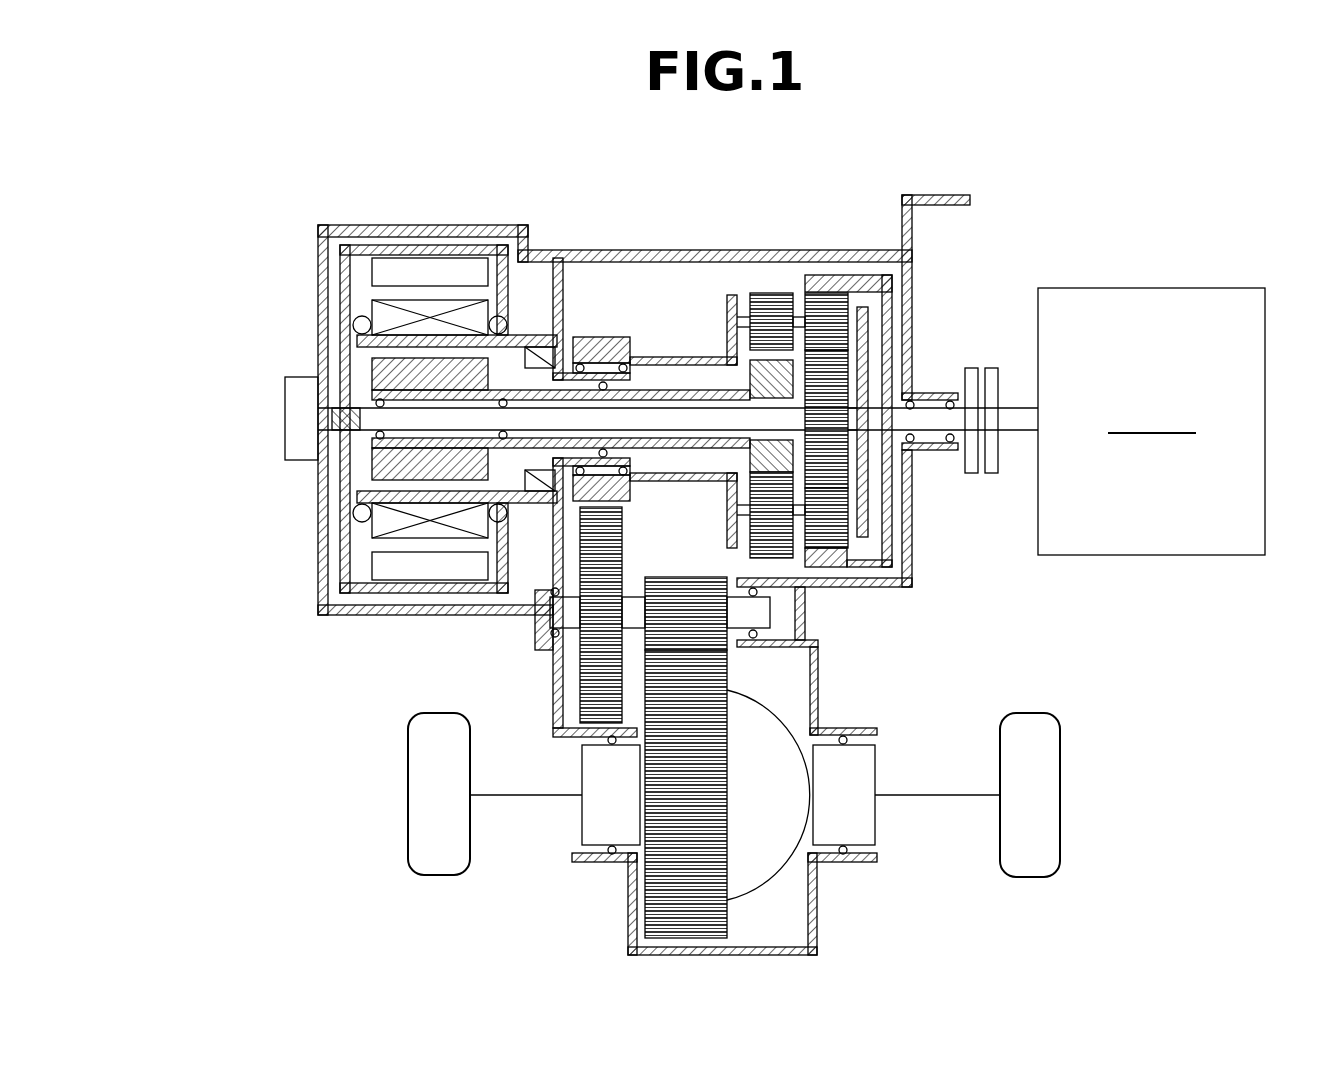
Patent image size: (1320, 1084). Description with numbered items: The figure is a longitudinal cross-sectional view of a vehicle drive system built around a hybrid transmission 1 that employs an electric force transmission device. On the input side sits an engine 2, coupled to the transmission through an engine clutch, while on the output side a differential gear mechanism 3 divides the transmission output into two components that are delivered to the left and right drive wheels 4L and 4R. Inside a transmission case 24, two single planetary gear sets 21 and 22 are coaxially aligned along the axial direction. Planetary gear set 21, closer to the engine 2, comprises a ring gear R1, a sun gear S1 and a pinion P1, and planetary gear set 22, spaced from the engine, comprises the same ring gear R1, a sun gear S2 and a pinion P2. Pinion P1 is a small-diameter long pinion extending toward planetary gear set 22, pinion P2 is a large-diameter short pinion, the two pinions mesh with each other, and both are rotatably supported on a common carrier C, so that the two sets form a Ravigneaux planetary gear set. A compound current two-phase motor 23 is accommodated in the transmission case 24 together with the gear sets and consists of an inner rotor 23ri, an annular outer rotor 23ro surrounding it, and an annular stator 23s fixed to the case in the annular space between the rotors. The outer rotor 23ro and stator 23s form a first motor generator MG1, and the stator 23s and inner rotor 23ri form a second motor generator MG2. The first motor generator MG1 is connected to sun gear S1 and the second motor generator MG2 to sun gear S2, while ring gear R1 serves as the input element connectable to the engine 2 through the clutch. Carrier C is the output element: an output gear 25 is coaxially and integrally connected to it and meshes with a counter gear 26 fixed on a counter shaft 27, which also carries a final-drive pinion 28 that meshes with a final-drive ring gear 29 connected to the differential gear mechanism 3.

The hybrid transmission 1 is at (608, 238).
The engine 2 is at (1151, 288).
The differential gear mechanism 3 is at (793, 886).
The left drive wheel 4L is at (408, 768).
The right drive wheel 4R is at (1060, 803).
The planetary gear set 21 is at (853, 300).
The planetary gear set 22 is at (745, 284).
The compound current two-phase motor 23 is at (427, 240).
The outer rotor 23ro is at (378, 272).
The annular stator 23s is at (378, 310).
The inner rotor 23ri is at (378, 372).
The transmission case 24 is at (492, 225).
The output gear 25 is at (604, 346).
The counter gear 26 is at (590, 680).
The counter shaft 27 is at (762, 613).
The final-drive pinion 28 is at (720, 645).
The final-drive ring gear 29 is at (712, 730).
The first motor generator MG1 is at (218, 228).
The second motor generator MG2 is at (218, 288).
The ring gear R1 is at (812, 277).
The pinion P1 is at (850, 300).
The sun gear S1 is at (840, 382).
The carrier C is at (868, 330).
The sun gear S2 is at (758, 367).
The pinion P2 is at (762, 487).